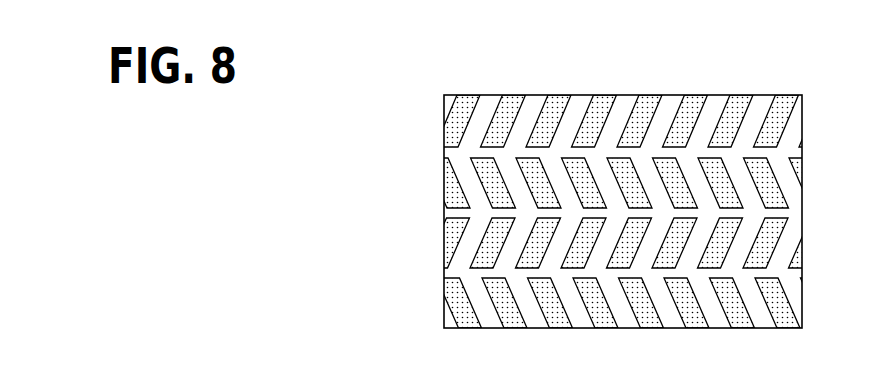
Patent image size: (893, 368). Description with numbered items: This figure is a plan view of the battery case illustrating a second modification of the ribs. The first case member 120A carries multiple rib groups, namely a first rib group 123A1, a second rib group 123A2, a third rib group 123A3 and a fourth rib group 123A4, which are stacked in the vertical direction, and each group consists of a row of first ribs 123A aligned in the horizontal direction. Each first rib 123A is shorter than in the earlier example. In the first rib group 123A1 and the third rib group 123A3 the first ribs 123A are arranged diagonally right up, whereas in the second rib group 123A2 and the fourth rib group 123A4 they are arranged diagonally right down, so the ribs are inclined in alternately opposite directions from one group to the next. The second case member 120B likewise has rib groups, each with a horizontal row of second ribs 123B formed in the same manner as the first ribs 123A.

The first case member 120A is at (473, 93).
The second case member 120B is at (580, 169).
The first rib 123A is at (515, 102).
The second rib 123B is at (580, 191).
The first rib group 123A1 is at (639, 121).
The second rib group 123A2 is at (629, 183).
The third rib group 123A3 is at (629, 243).
The fourth rib group 123A4 is at (641, 303).